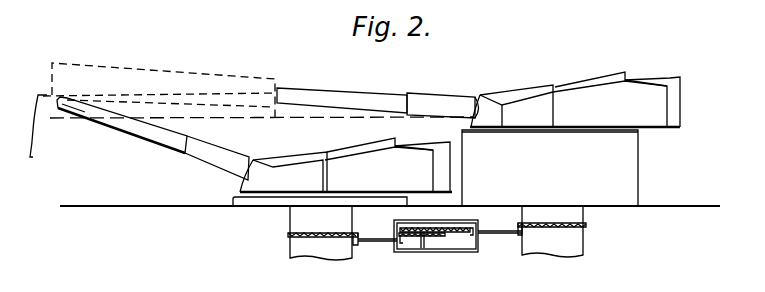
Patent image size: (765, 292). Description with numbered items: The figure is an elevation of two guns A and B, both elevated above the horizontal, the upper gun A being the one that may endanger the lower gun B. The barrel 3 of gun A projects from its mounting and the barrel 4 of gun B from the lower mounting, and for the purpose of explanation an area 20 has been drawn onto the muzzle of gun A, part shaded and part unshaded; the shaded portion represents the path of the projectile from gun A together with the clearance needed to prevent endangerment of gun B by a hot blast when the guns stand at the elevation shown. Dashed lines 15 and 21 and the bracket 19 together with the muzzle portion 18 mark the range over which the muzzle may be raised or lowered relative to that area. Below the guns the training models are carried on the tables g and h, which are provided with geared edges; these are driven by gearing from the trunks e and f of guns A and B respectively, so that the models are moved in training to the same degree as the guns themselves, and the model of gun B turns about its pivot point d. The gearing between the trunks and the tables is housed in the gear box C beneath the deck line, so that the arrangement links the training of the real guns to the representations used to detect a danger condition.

The upper gun barrel 3 is at (343, 95).
The lower gun barrel 4 is at (140, 128).
The elevated barrel position (dashed) 15 is at (210, 83).
The muzzle portion 18 is at (80, 115).
The elevation range bracket 19 is at (49, 126).
The area 20 is at (113, 93).
The depressed line of fire 21 is at (163, 108).
The gun A is at (575, 99).
The gun B is at (345, 165).
The gear box C is at (440, 225).
The table g is at (463, 228).
The table h is at (422, 236).
The pivot point d is at (427, 250).
The trunk e is at (572, 214).
The trunk f is at (302, 215).